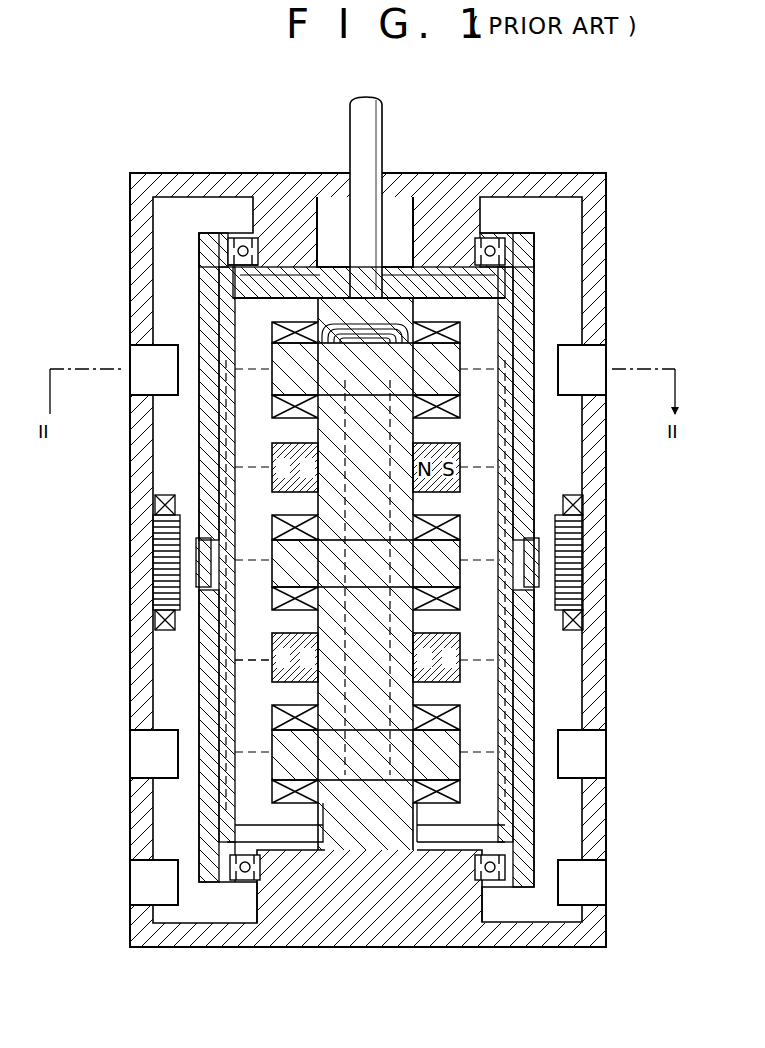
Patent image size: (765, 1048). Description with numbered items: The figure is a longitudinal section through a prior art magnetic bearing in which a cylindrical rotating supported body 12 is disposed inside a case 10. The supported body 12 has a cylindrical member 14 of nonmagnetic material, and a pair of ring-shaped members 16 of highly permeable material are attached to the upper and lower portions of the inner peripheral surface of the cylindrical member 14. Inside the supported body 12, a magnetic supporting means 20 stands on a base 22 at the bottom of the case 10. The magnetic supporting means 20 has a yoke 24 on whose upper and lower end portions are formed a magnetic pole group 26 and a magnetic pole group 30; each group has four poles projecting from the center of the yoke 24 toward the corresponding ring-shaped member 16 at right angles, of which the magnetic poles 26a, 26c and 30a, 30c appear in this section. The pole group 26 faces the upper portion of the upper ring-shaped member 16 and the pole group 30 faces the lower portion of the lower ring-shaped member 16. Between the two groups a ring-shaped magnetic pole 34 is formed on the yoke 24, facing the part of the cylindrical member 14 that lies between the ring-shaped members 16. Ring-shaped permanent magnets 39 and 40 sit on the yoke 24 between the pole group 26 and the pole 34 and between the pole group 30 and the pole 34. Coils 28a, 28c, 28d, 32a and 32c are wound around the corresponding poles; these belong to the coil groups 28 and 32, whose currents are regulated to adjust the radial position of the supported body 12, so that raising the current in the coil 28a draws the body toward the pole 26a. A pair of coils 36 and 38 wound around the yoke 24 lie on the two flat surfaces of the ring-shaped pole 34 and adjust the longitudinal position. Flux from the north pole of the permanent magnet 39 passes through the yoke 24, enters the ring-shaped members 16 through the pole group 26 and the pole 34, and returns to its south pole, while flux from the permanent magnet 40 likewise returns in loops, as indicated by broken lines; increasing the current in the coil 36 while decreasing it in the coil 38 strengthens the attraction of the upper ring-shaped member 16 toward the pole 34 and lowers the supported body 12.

The case 10 is at (598, 247).
The supported body 12 is at (197, 677).
The cylindrical member 14 is at (214, 622).
The ring-shaped members 16 is at (228, 468).
The magnetic supporting means 20 is at (480, 497).
The base 22 is at (372, 858).
The yoke 24 is at (425, 662).
The magnetic pole group 26 is at (283, 357).
The magnetic pole 26a is at (280, 385).
The magnetic pole 26c is at (448, 400).
The coil group 28 is at (283, 323).
The coil 28a is at (303, 303).
The coil 28c is at (440, 330).
The coil 28d is at (365, 330).
The magnetic pole group 30 is at (285, 767).
The magnetic pole 30a is at (292, 740).
The magnetic pole 30c is at (458, 768).
The coil group 32 is at (288, 722).
The coil 32a is at (238, 793).
The coil 32c is at (476, 730).
The ring-shaped magnetic pole 34 is at (282, 600).
The coil 36 is at (277, 527).
The coil 38 is at (278, 635).
The permanent magnet 39 is at (282, 441).
The permanent magnet 40 is at (272, 673).